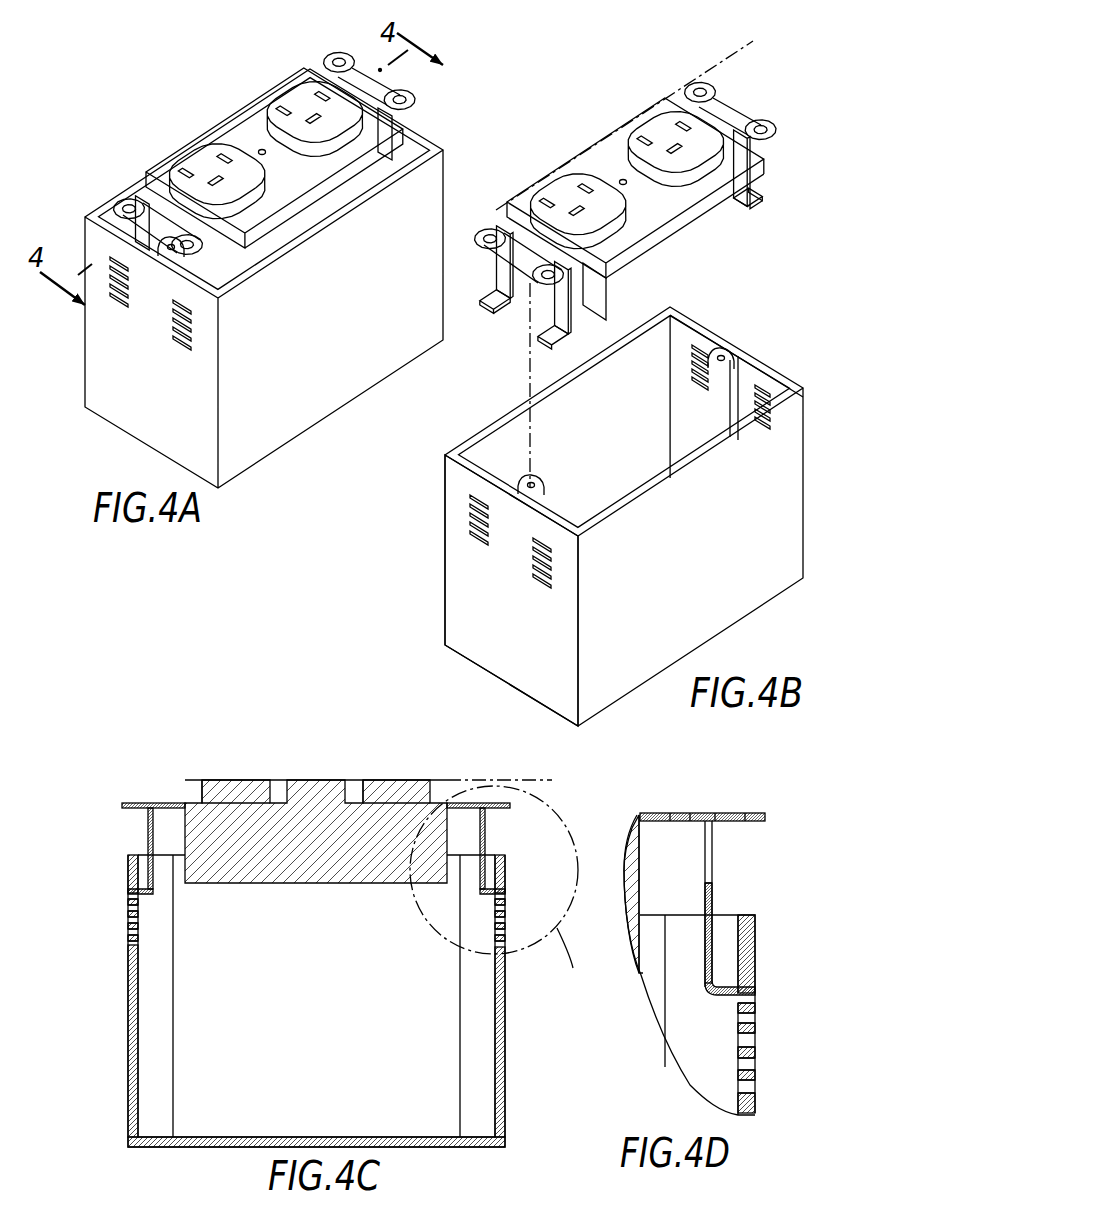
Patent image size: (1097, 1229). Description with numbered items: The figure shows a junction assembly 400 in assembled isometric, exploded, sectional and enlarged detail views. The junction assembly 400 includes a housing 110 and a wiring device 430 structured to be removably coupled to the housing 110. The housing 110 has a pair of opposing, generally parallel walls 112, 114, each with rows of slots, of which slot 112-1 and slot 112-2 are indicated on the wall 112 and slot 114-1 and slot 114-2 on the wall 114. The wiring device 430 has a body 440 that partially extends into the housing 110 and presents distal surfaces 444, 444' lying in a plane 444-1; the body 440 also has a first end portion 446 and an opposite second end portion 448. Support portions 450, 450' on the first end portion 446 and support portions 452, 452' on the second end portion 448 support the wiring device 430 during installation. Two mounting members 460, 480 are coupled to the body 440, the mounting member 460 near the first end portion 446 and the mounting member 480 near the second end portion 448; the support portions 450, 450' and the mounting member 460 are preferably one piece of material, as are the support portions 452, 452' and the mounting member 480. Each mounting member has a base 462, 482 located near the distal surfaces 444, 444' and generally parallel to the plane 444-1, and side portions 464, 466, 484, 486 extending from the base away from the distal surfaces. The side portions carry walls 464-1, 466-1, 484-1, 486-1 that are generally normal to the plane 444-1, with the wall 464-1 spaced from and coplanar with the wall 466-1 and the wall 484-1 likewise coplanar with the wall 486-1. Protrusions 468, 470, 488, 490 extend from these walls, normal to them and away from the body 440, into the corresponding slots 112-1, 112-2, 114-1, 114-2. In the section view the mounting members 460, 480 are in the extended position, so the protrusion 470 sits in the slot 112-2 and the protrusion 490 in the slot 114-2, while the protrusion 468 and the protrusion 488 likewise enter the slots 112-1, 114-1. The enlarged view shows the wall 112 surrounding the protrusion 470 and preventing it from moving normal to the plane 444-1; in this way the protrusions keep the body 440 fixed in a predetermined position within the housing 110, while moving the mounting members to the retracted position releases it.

In FIG. 4A, the housing 110 is at (138, 398).
In FIG. 4B, the housing 110 is at (593, 502).
In FIG. 4C, the housing 110 is at (307, 997).
In FIG. 4D, the housing 110 is at (716, 996).
In FIG. 4B, the wall 112 is at (493, 590).
In FIG. 4C, the wall 112 is at (532, 992).
In FIG. 4D, the wall 112 is at (773, 991).
In FIG. 4B, the slot 112-1 is at (543, 533).
In FIG. 4B, the slot 112-2 is at (470, 503).
In FIG. 4C, the slot 112-2 is at (505, 897).
In FIG. 4D, the slot 112-2 is at (753, 1000).
In FIG. 4B, the wall 114 is at (742, 359).
In FIG. 4C, the wall 114 is at (94, 993).
In FIG. 4B, the slot 114-1 is at (757, 387).
In FIG. 4B, the slot 114-2 is at (693, 347).
In FIG. 4C, the slot 114-2 is at (128, 867).
In FIG. 4A, the junction assembly 400 is at (242, 255).
In FIG. 4B, the junction assembly 400 is at (602, 363).
In FIG. 4C, the junction assembly 400 is at (326, 919).
In FIG. 4D, the junction assembly 400 is at (716, 974).
In FIG. 4A, the wiring device 430 is at (240, 97).
In FIG. 4B, the wiring device 430 is at (630, 243).
In FIG. 4B, the body 440 is at (630, 162).
In FIG. 4C, the body 440 is at (368, 787).
In FIG. 4B, the distal surface 444 is at (600, 211).
In FIG. 4C, the distal surface 444 is at (386, 766).
In FIG. 4B, the distal surface 444' is at (666, 131).
In FIG. 4C, the distal surface 444' is at (246, 765).
In FIG. 4B, the plane 444-1 is at (753, 40).
In FIG. 4C, the plane 444-1 is at (473, 780).
In FIG. 4B, the first end portion 446 is at (618, 245).
In FIG. 4B, the second end portion 448 is at (737, 167).
In FIG. 4B, the first support portion 450 is at (477, 219).
In FIG. 4C, the first support portion 450 is at (517, 794).
In FIG. 4D, the first support portion 450 is at (702, 795).
In FIG. 4B, the first support portion 450' is at (586, 281).
In FIG. 4B, the second support portion 452 is at (718, 82).
In FIG. 4C, the second support portion 452 is at (142, 780).
In FIG. 4B, the second support portion 452' is at (772, 111).
In FIG. 4B, the mounting member 460 is at (535, 319).
In FIG. 4C, the mounting member 460 is at (457, 875).
In FIG. 4D, the mounting member 460 is at (734, 928).
In FIG. 4B, the base 462 is at (525, 240).
In FIG. 4B, the side portion 464 is at (575, 320).
In FIG. 4B, the wall 464-1 is at (557, 340).
In FIG. 4B, the side portion 466 is at (542, 322).
In FIG. 4B, the wall 466-1 is at (490, 300).
In FIG. 4C, the wall 466-1 is at (480, 860).
In FIG. 4B, the protrusion 468 is at (530, 390).
In FIG. 4B, the protrusion 470 is at (476, 300).
In FIG. 4C, the protrusion 470 is at (488, 898).
In FIG. 4D, the protrusion 470 is at (722, 995).
In FIG. 4B, the mounting member 480 is at (758, 155).
In FIG. 4C, the mounting member 480 is at (137, 823).
In FIG. 4B, the base 482 is at (780, 163).
In FIG. 4B, the side portion 484 is at (772, 173).
In FIG. 4B, the wall 484-1 is at (737, 152).
In FIG. 4C, the side portion 486 is at (137, 851).
In FIG. 4C, the wall 486-1 is at (148, 843).
In FIG. 4B, the protrusion 488 is at (785, 197).
In FIG. 4C, the protrusion 490 is at (153, 893).